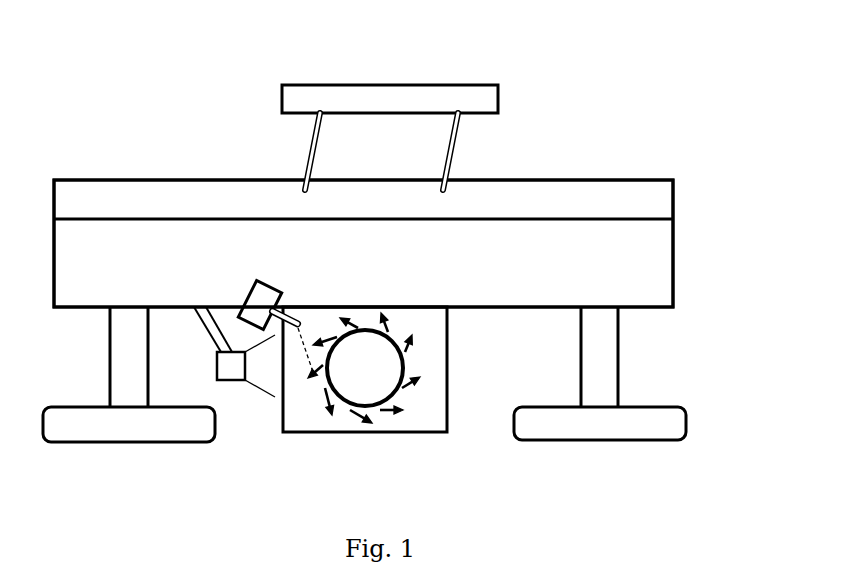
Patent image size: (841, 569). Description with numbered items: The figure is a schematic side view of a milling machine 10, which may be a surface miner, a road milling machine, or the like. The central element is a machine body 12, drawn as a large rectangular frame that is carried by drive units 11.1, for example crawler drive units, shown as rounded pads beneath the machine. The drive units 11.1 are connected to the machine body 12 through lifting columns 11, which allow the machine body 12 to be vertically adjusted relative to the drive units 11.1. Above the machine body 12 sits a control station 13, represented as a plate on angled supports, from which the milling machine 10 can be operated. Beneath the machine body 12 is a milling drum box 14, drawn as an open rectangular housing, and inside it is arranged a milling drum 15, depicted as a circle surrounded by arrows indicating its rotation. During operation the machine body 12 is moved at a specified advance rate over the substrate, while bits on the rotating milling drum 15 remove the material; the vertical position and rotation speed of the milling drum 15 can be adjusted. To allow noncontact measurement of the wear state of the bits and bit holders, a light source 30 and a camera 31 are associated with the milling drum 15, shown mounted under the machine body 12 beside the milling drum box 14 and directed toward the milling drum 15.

The milling machine 10 is at (622, 150).
The lifting columns 11 is at (607, 355).
The drive units 11.1 is at (675, 432).
The machine body 12 is at (660, 260).
The control station 13 is at (390, 99).
The milling drum box 14 is at (433, 353).
The milling drum 15 is at (400, 398).
The light source 30 is at (238, 406).
The camera 31 is at (280, 280).